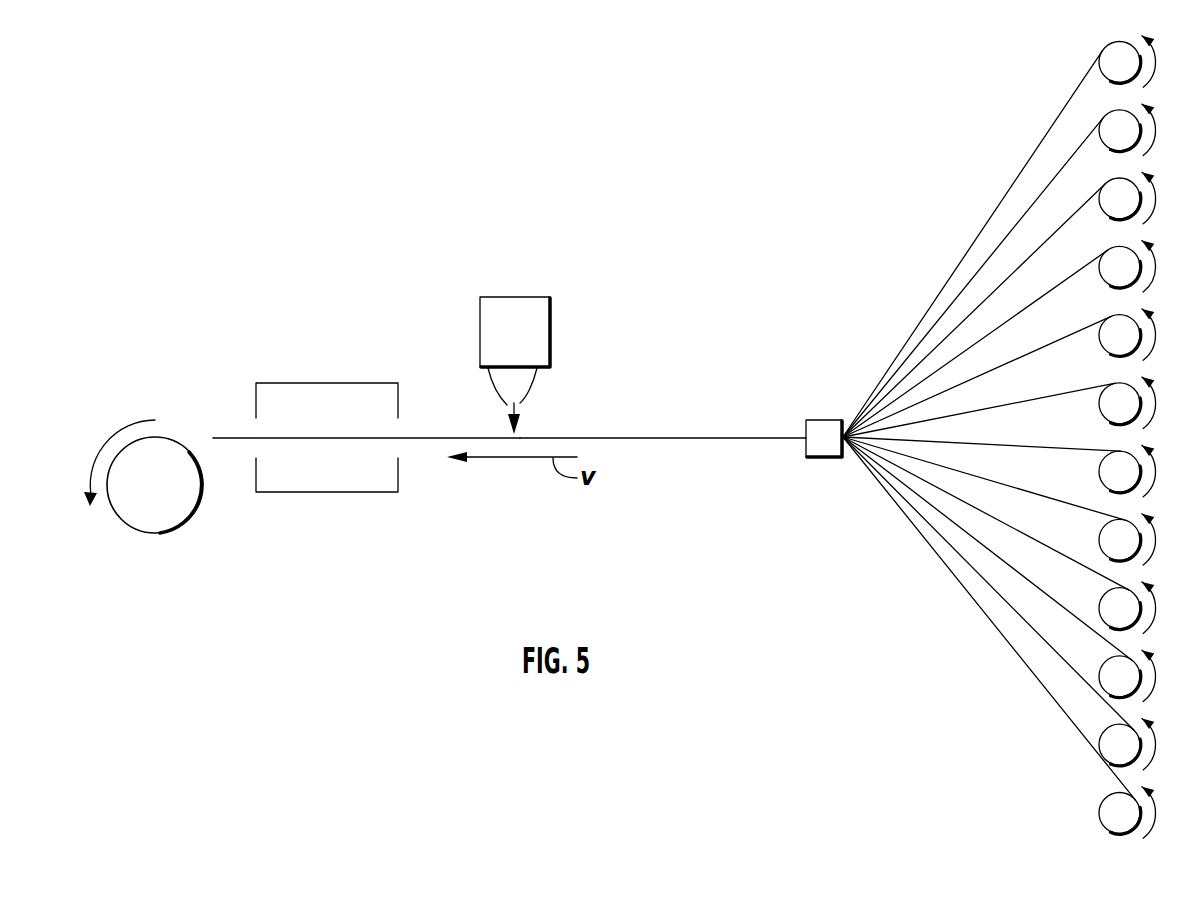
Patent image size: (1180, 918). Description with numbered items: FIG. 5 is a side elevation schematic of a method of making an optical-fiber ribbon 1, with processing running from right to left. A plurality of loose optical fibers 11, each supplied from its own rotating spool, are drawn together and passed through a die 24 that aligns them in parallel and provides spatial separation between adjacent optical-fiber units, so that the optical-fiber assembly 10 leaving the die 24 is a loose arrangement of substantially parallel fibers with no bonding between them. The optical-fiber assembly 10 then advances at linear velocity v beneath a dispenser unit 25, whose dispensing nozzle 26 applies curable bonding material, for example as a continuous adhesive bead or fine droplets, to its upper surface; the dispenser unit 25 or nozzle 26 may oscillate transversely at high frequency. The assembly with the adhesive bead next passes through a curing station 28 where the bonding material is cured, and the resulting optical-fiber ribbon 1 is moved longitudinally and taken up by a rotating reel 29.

The optical-fiber ribbon 1 is at (213, 437).
The optical-fiber assembly 10 is at (675, 438).
The optical fibers 11 is at (1063, 108).
The die 24 is at (817, 420).
The dispenser unit 25 is at (528, 295).
The dispensing nozzle 26 is at (523, 392).
The curing station 28 is at (348, 383).
The reel 29 is at (160, 497).